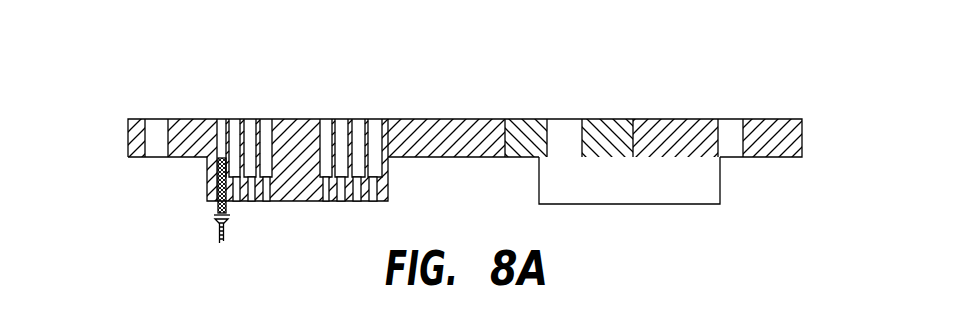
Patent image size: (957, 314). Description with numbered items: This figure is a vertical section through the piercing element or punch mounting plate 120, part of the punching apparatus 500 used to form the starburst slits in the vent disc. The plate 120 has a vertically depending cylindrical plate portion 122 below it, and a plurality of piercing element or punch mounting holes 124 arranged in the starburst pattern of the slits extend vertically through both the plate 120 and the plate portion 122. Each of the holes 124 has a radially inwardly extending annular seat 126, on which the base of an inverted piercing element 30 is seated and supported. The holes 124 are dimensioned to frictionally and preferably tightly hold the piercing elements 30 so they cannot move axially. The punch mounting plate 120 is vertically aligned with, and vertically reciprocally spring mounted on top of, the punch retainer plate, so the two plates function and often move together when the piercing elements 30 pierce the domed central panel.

The connector assembly 500 is at (238, 87).
The punch mounting plate 120 is at (127, 139).
The cylindrical plate portion 122 is at (388, 183).
The punch mounting holes 124 is at (253, 123).
The annular seat 126 is at (207, 178).
The piercing element 30 is at (215, 210).